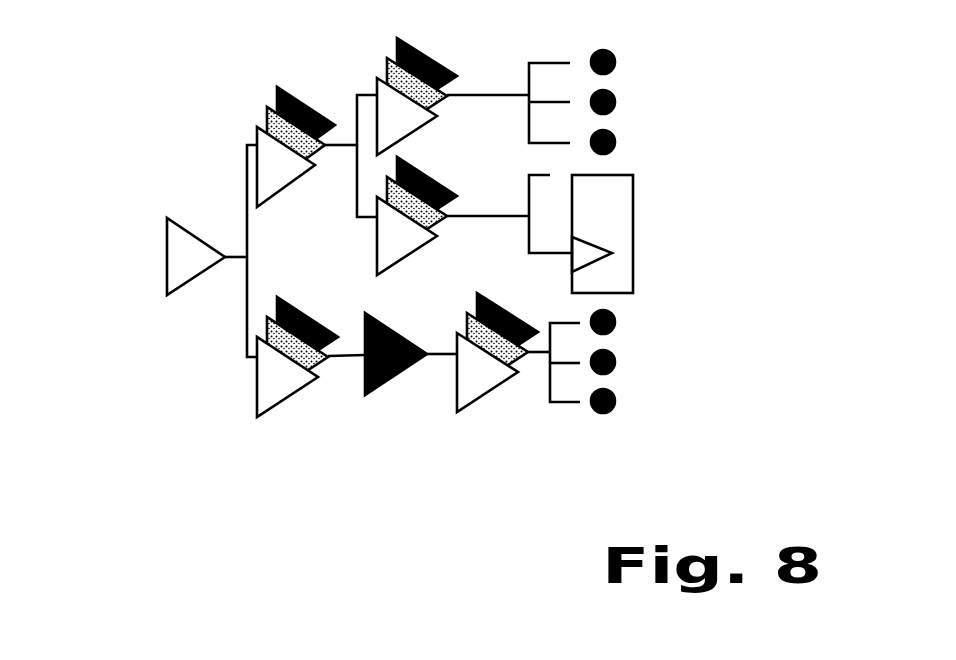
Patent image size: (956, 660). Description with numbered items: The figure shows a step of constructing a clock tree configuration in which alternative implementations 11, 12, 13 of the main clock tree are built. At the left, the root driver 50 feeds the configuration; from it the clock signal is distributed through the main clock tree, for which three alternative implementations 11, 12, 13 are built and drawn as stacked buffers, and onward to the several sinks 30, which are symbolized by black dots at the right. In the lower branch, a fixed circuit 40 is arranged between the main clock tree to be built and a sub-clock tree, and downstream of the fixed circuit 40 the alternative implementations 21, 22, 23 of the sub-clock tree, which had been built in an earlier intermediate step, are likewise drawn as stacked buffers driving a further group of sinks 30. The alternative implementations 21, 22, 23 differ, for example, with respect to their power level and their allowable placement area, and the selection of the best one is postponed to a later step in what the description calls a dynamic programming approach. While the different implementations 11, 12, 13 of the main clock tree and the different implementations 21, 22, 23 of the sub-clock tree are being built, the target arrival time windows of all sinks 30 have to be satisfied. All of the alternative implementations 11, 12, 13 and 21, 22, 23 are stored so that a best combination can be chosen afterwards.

The alternative implementation of the main clock tree 11 is at (268, 173).
The alternative implementation of the main clock tree 12 is at (278, 132).
The alternative implementation of the main clock tree 13 is at (297, 97).
The alternative implementation of the sub-clock tree 21 is at (477, 373).
The alternative implementation of the sub-clock tree 22 is at (505, 347).
The alternative implementation of the sub-clock tree 23 is at (523, 343).
The sinks 30 is at (623, 113).
The fixed circuit 40 is at (400, 377).
The root driver 50 is at (158, 255).